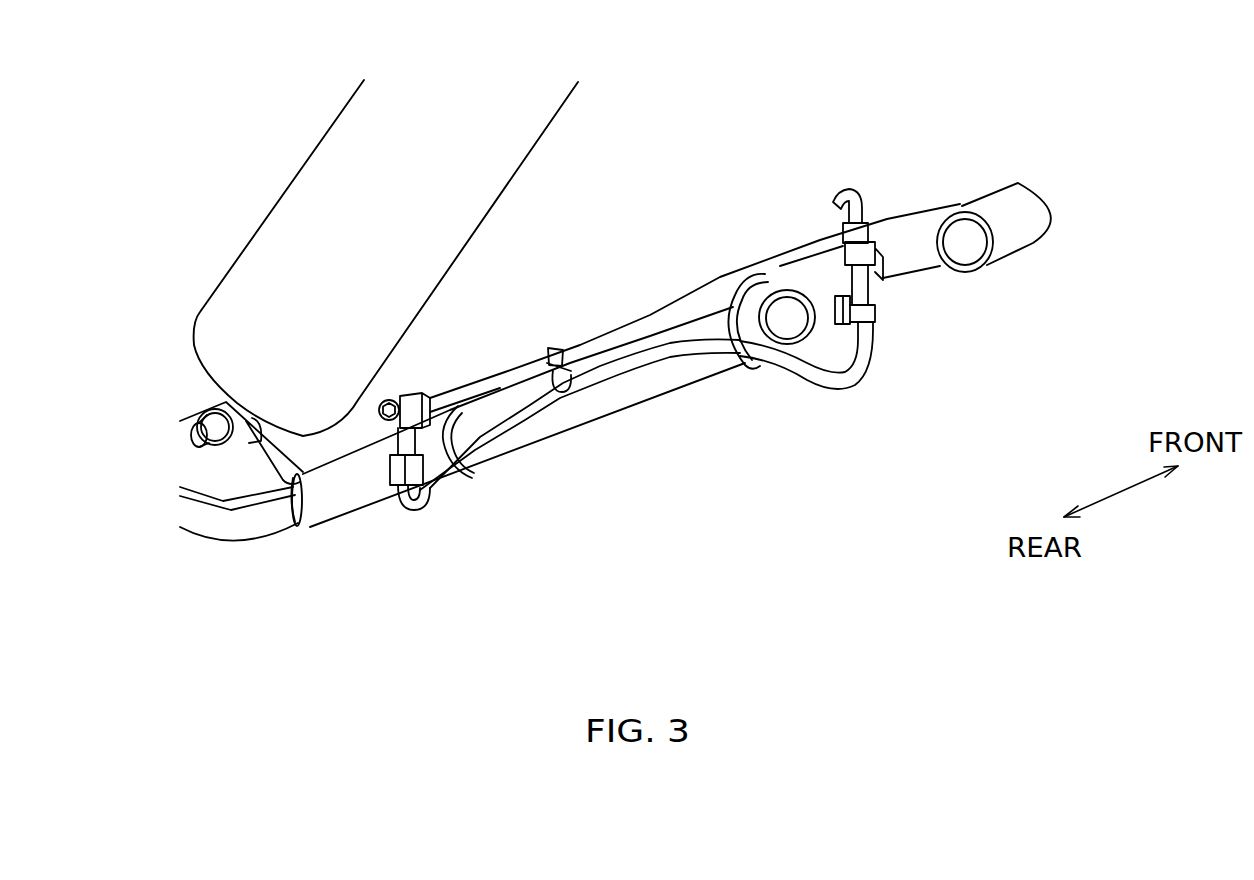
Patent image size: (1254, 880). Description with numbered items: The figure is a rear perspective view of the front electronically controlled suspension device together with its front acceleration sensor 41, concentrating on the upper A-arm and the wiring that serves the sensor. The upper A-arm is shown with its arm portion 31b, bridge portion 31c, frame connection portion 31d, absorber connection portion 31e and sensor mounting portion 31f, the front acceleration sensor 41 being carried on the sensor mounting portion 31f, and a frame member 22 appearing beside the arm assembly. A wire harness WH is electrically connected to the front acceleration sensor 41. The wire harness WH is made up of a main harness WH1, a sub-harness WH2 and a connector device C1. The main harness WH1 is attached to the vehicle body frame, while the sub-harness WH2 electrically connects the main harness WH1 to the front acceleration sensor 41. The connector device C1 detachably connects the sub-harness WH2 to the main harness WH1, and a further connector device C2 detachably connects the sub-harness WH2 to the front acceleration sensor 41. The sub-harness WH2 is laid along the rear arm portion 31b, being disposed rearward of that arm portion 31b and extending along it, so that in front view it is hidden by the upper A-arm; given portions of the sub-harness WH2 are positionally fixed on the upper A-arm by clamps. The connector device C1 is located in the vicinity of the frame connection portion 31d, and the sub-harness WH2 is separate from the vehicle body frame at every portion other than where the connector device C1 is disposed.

The frame member 22 is at (287, 185).
The arm portion 31b is at (637, 308).
The bridge portion 31c is at (754, 281).
The frame connection portion 31d is at (820, 278).
The absorber connection portion 31e is at (197, 408).
The sensor mounting portion 31f is at (402, 393).
The front acceleration sensor 41 is at (433, 398).
The connector device C1 is at (880, 283).
The connector device C2 is at (393, 478).
The wire harness WH is at (867, 399).
The main harness WH1 is at (858, 188).
The sub-harness WH2 is at (523, 417).